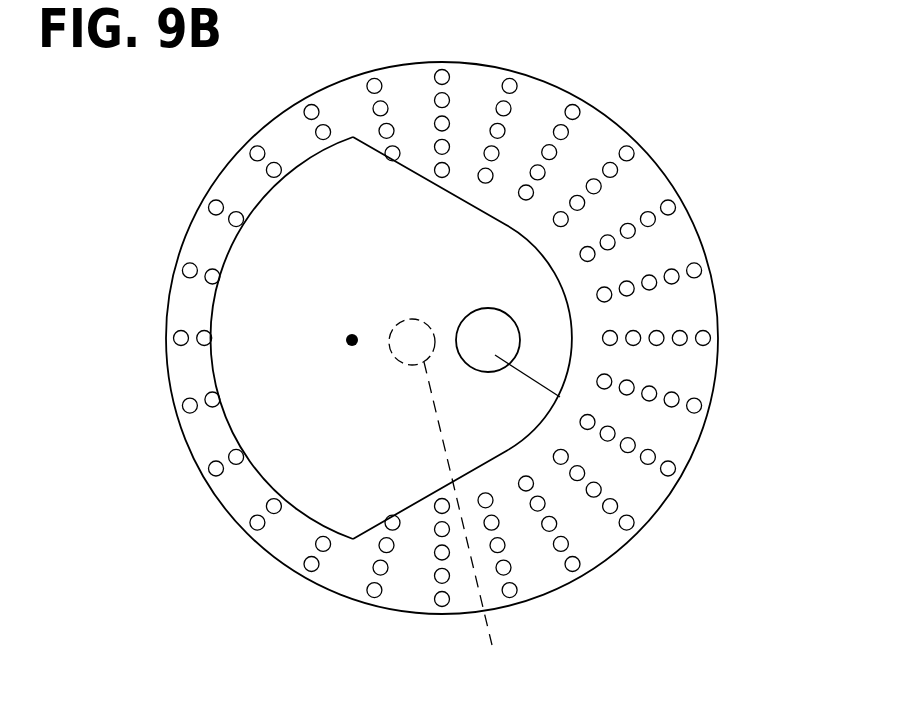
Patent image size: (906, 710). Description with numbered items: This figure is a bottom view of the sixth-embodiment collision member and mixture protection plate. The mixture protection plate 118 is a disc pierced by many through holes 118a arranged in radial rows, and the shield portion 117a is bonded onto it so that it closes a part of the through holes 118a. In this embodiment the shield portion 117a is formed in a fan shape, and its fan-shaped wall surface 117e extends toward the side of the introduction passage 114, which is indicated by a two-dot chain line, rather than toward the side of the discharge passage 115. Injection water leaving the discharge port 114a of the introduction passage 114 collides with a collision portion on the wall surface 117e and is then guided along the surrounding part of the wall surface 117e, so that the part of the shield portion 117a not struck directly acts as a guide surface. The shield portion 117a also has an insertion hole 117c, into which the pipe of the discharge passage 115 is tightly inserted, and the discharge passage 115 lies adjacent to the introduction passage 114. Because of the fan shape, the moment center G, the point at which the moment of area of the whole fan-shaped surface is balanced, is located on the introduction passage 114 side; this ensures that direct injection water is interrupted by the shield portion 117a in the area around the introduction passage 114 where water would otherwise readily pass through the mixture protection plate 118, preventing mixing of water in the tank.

The introduction passage 114 is at (418, 330).
The discharge port 114a is at (481, 521).
The discharge passage 115 is at (560, 397).
The shield portion 117a is at (257, 268).
The insertion hole 117c is at (495, 343).
The wall surface 117e is at (348, 427).
The mixture protection plate 118 is at (672, 245).
The through holes 118a is at (667, 210).
The moment center G is at (345, 363).